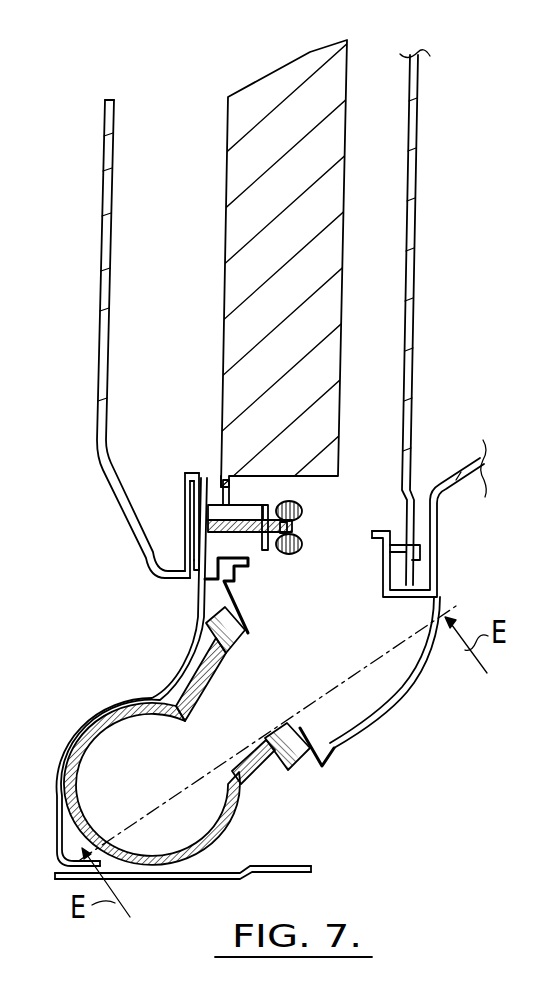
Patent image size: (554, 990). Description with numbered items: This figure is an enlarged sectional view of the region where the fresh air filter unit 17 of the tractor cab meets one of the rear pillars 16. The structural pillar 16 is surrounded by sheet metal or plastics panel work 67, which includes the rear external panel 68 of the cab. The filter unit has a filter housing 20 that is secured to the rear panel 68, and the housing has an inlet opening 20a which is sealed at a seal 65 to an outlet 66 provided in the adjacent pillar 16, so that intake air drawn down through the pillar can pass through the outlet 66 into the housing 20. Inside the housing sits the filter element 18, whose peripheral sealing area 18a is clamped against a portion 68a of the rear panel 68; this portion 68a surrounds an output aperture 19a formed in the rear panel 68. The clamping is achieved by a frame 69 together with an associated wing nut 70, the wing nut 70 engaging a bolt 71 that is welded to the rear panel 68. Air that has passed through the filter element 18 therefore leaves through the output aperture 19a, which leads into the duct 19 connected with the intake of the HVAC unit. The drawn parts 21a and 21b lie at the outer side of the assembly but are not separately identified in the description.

The rear pillar 16 is at (236, 823).
The fresh air filter unit 17 is at (358, 262).
The filter element 18 is at (261, 97).
The peripheral sealing area 18a is at (230, 483).
The duct 19 is at (117, 350).
The output aperture 19a is at (207, 482).
The filter housing 20 is at (435, 596).
The inlet opening 20a is at (282, 690).
The outer panel 21a is at (412, 345).
The outer panel flange 21b is at (485, 497).
The seal 65 is at (236, 634).
The outlet 66 is at (262, 766).
The panel work 67 is at (270, 871).
The rear external panel 68 is at (185, 583).
The portion of rear panel 68a is at (183, 490).
The frame 69 is at (267, 494).
The wing nut 70 is at (297, 549).
The bolt 71 is at (242, 533).